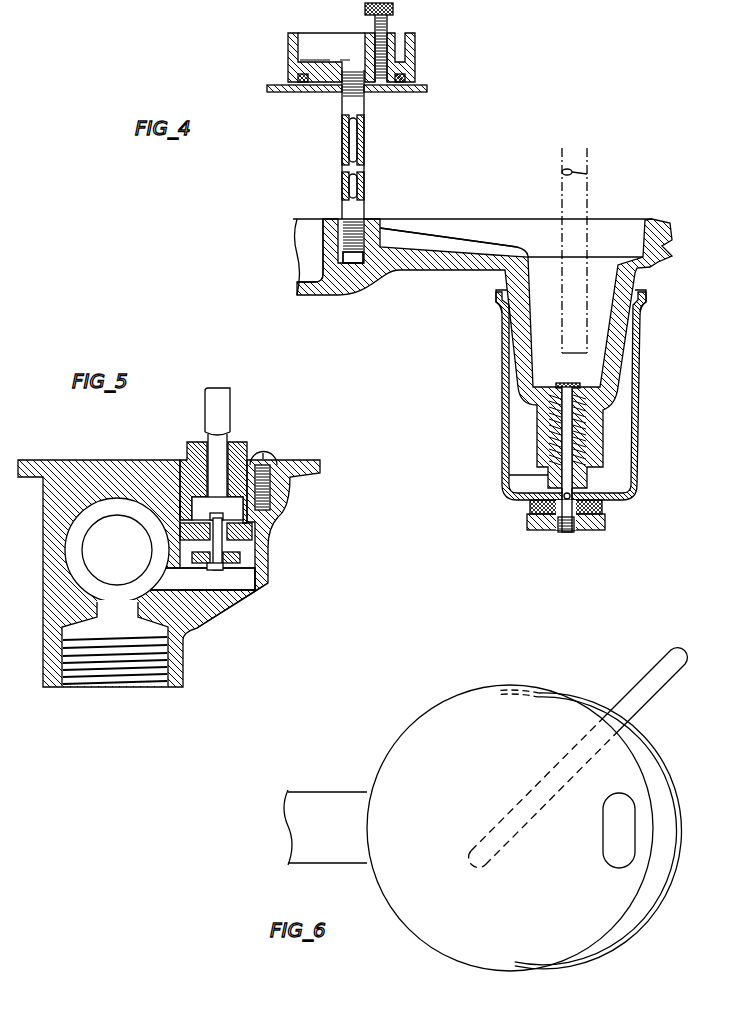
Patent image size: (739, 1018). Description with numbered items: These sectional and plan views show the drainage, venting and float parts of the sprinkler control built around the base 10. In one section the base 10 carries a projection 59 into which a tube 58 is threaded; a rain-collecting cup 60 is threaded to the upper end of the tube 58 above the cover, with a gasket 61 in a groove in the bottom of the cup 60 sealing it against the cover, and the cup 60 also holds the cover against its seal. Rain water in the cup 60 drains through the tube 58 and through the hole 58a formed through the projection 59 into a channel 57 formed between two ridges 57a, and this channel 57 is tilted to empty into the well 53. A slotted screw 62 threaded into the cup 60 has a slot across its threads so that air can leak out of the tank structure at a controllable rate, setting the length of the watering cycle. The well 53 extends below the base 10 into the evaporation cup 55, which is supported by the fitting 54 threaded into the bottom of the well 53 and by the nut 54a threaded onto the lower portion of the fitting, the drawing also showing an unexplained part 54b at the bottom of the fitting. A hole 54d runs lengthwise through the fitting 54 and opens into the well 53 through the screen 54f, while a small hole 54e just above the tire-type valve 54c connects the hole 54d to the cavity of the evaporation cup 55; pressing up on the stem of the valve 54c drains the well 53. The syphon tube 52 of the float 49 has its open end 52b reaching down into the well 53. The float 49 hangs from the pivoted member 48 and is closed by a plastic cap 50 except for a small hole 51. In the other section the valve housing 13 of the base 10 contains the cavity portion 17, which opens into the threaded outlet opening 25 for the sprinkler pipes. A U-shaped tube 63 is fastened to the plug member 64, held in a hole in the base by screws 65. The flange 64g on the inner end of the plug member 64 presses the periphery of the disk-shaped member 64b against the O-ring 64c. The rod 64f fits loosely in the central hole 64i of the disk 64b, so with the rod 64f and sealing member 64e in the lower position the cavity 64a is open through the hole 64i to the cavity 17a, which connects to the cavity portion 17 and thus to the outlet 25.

In FIG. 4, the base 10 is at (427, 269).
In FIG. 5, the valve housing 13 is at (192, 630).
In FIG. 5, the cavity portion 17 is at (83, 577).
In FIG. 5, the cavity 17a is at (232, 620).
In FIG. 5, the threaded outlet opening 25 is at (130, 670).
In FIG. 6, the member 48 is at (325, 808).
In FIG. 6, the float 49 is at (627, 765).
In FIG. 6, the cap 50 is at (442, 727).
In FIG. 6, the hole 51 is at (622, 842).
In FIG. 6, the syphon tube 52 is at (645, 712).
In FIG. 4, the open end 52b is at (590, 332).
In FIG. 4, the well 53 is at (498, 283).
In FIG. 4, the fitting 54 is at (583, 478).
In FIG. 4, the nut 54a is at (605, 525).
In FIG. 4, the washer 54b is at (603, 505).
In FIG. 4, the valve 54c is at (569, 542).
In FIG. 4, the hole 54d is at (569, 450).
In FIG. 4, the small hole 54e is at (550, 477).
In FIG. 4, the screen 54f is at (598, 370).
In FIG. 4, the evaporation cup 55 is at (502, 410).
In FIG. 4, the channel 57 is at (426, 243).
In FIG. 4, the ridges 57a is at (462, 240).
In FIG. 4, the tube 58 is at (364, 180).
In FIG. 4, the hole 58a is at (378, 242).
In FIG. 4, the projection 59 is at (332, 230).
In FIG. 4, the cup 60 is at (288, 54).
In FIG. 4, the gasket 61 is at (412, 81).
In FIG. 4, the slotted screw 62 is at (388, 28).
In FIG. 5, the U-shaped tube 63 is at (226, 409).
In FIG. 5, the plug member 64 is at (233, 453).
In FIG. 5, the cavity 64a is at (232, 503).
In FIG. 5, the disk-shaped member 64b is at (239, 558).
In FIG. 5, the O-ring 64c is at (245, 537).
In FIG. 5, the sealing member 64e is at (217, 568).
In FIG. 5, the rod 64f is at (207, 587).
In FIG. 5, the flange 64g is at (182, 507).
In FIG. 5, the central hole 64i is at (224, 517).
In FIG. 5, the screws 65 is at (273, 455).